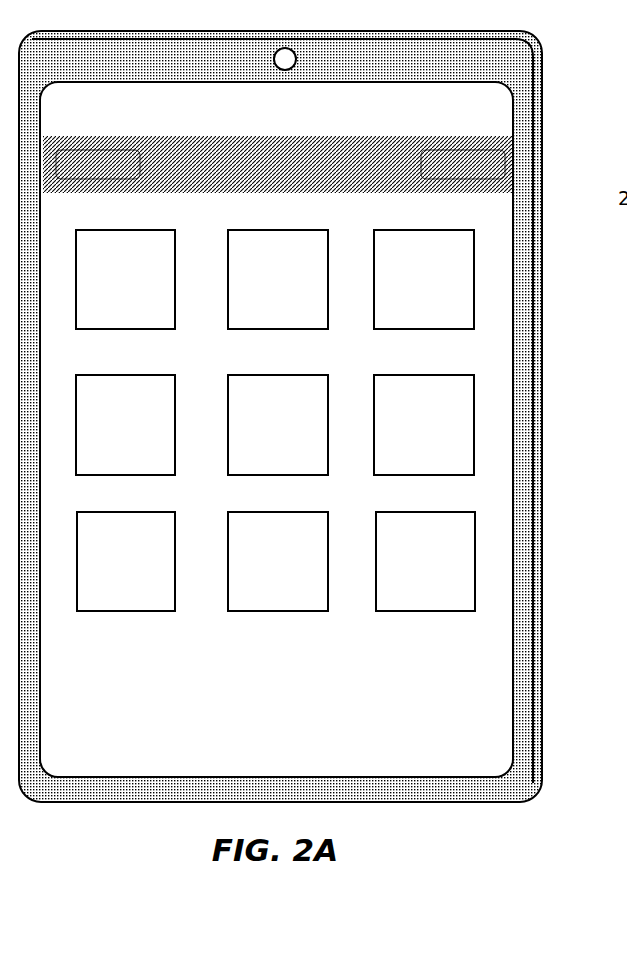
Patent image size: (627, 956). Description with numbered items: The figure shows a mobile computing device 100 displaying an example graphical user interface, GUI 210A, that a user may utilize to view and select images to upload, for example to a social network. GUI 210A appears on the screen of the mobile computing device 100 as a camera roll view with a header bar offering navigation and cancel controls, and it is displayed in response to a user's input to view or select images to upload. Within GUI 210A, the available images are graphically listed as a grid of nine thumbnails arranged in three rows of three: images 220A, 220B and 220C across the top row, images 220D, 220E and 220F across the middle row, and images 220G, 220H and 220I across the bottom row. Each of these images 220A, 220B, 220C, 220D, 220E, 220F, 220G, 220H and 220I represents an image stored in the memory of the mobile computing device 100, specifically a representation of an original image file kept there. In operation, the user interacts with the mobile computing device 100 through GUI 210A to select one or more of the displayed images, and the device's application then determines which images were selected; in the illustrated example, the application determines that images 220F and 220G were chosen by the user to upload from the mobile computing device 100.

The mobile computing device 100 is at (382, 65).
The GUI 210A is at (495, 692).
The image 220A is at (125, 279).
The image 220B is at (278, 279).
The image 220C is at (424, 279).
The image 220D is at (125, 425).
The image 220E is at (278, 425).
The image 220F is at (424, 425).
The image 220G is at (126, 561).
The image 220H is at (278, 561).
The image 220I is at (425, 561).